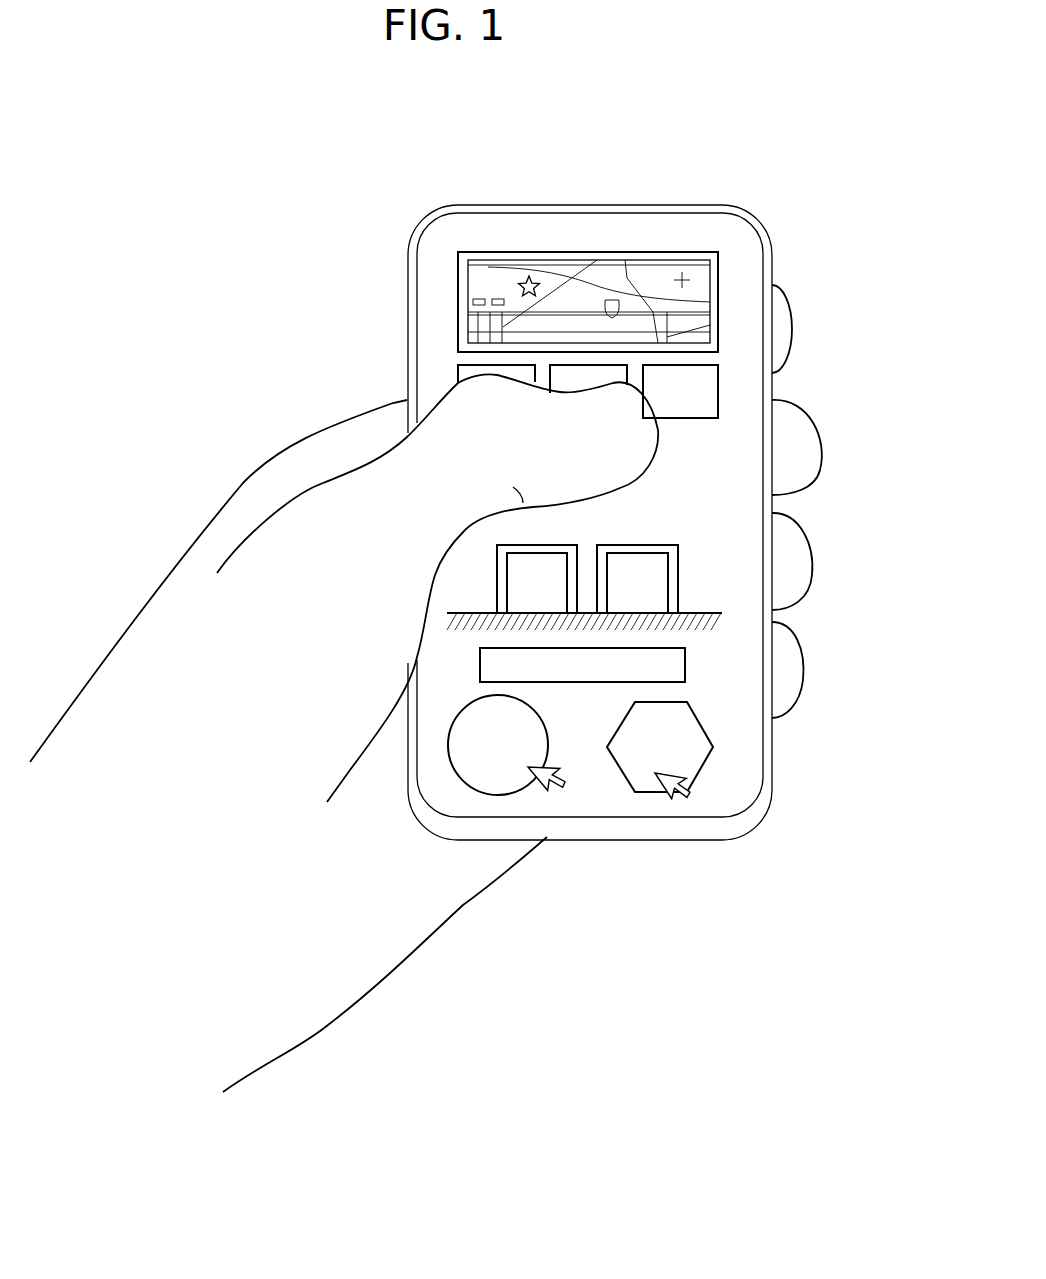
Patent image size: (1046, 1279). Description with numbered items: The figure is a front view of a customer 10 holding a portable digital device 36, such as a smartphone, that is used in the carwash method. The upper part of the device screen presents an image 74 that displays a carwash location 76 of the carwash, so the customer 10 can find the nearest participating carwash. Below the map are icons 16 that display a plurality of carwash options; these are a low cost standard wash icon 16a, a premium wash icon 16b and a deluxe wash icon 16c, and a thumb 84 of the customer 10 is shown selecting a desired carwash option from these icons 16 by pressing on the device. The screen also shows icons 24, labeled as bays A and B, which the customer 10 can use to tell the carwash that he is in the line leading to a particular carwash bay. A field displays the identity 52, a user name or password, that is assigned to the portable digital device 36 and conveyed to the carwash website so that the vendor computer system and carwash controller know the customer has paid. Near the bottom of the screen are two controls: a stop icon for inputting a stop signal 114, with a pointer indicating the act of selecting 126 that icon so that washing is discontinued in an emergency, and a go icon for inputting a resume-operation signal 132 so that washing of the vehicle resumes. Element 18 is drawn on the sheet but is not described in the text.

The customer 10 is at (215, 517).
The icons 16 is at (599, 391).
The low cost standard wash icon 16a is at (457, 378).
The premium wash icon 16b is at (580, 378).
The deluxe wash icon 16c is at (690, 402).
The touchscreen display 18 is at (736, 280).
The icons 24 is at (705, 571).
The portable digital device 36 is at (592, 205).
The identity 52 is at (685, 666).
The image 74 is at (523, 247).
The carwash location 76 is at (527, 281).
The thumb 84 is at (660, 430).
The stop signal 114 is at (702, 768).
The selecting 126 is at (667, 807).
The resume-operation signal 132 is at (495, 793).